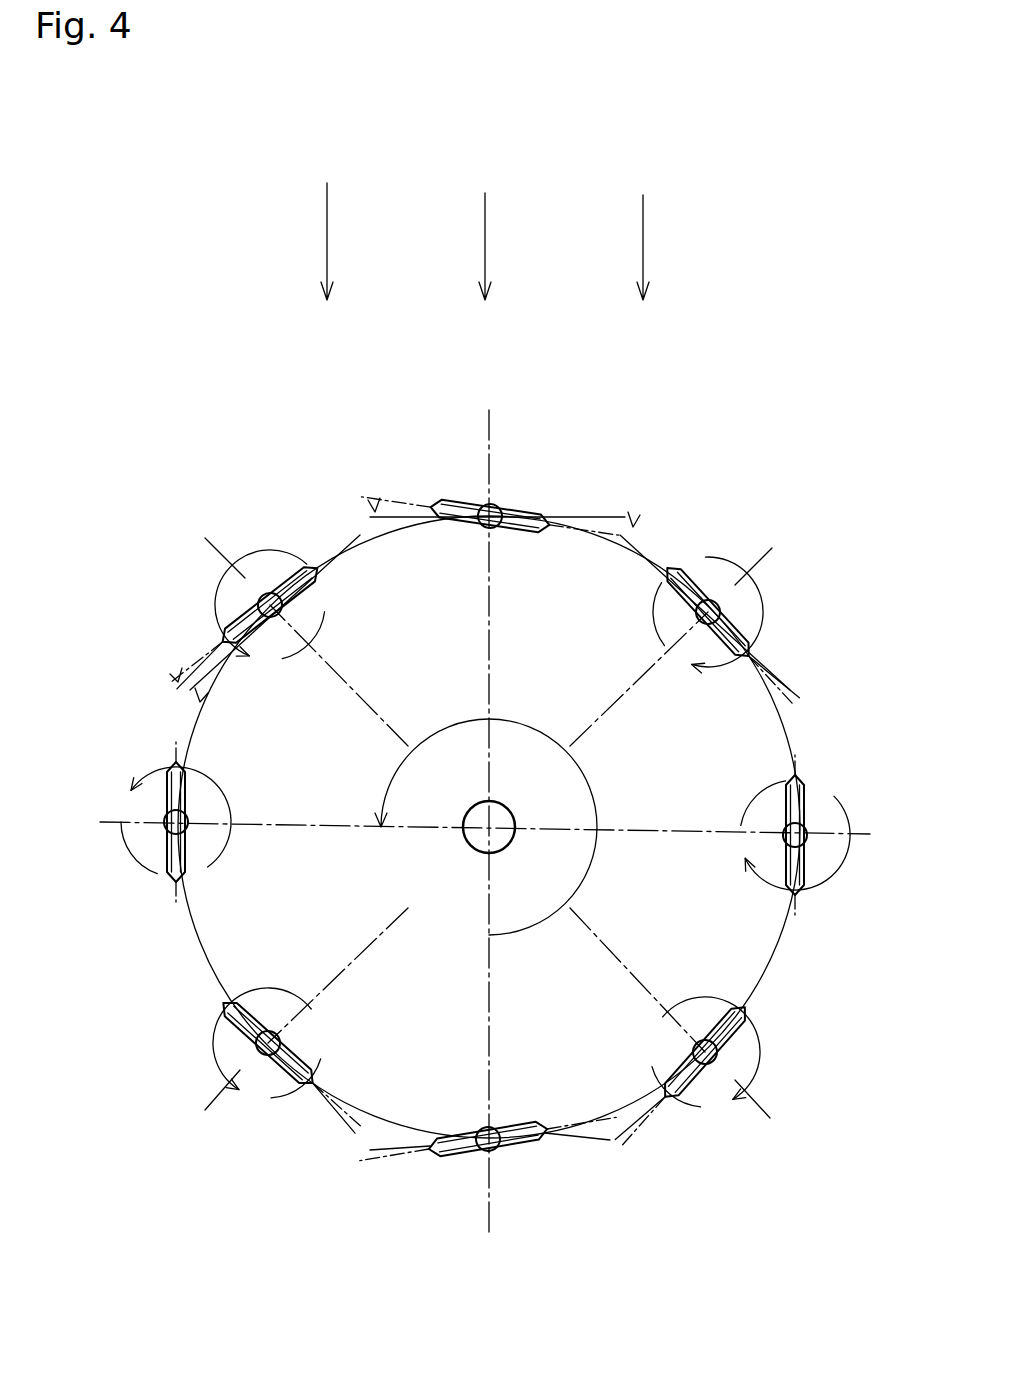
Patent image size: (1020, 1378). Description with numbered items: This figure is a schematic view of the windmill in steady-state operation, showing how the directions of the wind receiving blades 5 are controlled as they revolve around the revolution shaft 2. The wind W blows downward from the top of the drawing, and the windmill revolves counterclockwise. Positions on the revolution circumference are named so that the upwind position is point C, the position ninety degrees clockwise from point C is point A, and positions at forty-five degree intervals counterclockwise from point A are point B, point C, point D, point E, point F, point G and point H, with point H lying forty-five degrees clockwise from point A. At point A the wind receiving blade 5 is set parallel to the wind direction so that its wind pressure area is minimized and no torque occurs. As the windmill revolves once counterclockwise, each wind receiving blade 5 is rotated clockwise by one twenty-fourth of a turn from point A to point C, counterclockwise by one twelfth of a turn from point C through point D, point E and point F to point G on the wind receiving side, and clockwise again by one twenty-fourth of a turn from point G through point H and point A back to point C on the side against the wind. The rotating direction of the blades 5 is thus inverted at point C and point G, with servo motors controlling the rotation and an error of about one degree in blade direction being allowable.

The revolution shaft 2 is at (478, 850).
The wind receiving blade 5 is at (475, 506).
The wind direction W is at (487, 264).
The point A is at (875, 837).
The point B is at (784, 546).
The point C is at (485, 395).
The point D is at (194, 523).
The point E is at (84, 823).
The point F is at (186, 1131).
The point G is at (485, 1254).
The point H is at (784, 1134).